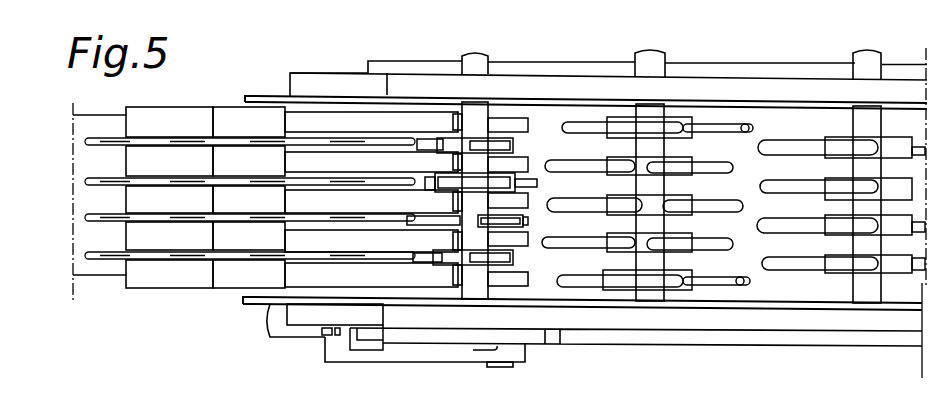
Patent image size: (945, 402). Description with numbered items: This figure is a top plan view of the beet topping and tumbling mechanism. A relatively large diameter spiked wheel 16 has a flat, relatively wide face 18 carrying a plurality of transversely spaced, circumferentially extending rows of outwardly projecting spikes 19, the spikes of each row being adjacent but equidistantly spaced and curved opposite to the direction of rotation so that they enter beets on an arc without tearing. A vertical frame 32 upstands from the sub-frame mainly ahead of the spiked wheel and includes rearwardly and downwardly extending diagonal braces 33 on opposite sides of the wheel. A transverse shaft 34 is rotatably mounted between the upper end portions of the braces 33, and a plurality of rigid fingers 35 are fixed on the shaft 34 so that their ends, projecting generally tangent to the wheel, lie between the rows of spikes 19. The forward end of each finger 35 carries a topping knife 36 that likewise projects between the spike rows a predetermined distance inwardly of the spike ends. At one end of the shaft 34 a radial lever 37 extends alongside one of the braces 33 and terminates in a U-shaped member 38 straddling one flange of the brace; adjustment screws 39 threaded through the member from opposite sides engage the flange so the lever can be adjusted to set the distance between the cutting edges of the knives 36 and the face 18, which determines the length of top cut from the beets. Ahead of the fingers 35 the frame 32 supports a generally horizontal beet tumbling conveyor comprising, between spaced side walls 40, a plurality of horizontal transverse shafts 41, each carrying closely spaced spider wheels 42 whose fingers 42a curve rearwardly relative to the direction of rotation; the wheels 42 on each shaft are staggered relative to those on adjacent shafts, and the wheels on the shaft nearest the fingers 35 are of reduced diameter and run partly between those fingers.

The spiked wheel 16 is at (97, 280).
The face 18 is at (90, 157).
The spikes 19 is at (75, 255).
The vertical frame 32 is at (737, 70).
The diagonal braces 33 is at (270, 323).
The transverse shaft 34 is at (553, 267).
The rigid fingers 35 is at (314, 120).
The topping knife 36 is at (147, 277).
The radial lever 37 is at (433, 357).
The U-shaped member 38 is at (367, 347).
The adjustment screws 39 is at (322, 335).
The side walls 40 is at (782, 105).
The horizontal transverse shafts 41 is at (480, 63).
The spider wheels 42 is at (612, 233).
The fingers of spider wheels 42a is at (562, 125).